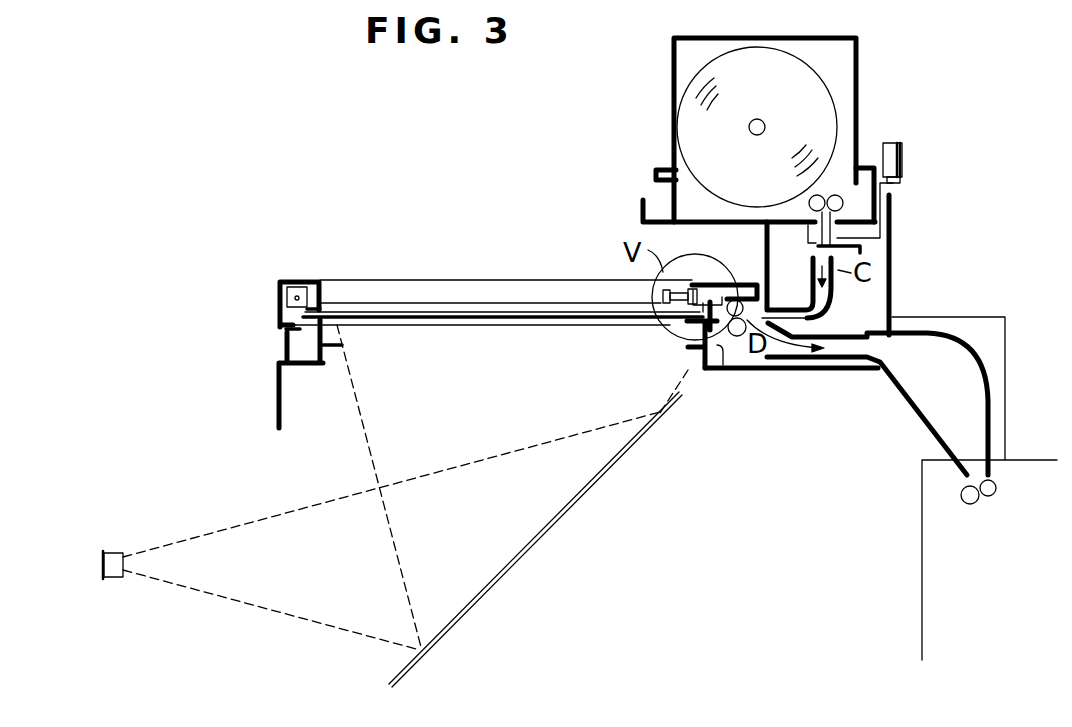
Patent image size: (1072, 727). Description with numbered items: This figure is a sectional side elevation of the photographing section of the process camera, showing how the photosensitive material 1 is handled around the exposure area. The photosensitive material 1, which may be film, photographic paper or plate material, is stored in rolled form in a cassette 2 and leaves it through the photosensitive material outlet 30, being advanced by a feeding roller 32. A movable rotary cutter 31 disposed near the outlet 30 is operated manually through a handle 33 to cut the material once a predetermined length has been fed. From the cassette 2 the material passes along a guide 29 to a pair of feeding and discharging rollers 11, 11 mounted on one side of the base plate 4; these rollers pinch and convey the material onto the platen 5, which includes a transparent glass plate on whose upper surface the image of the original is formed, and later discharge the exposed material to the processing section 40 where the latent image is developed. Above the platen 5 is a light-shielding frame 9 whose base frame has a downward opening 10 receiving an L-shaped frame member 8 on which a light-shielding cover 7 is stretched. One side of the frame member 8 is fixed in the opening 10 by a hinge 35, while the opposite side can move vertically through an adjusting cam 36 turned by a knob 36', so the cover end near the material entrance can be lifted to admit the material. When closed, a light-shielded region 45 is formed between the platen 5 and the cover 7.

The photosensitive material 1 is at (836, 117).
The cassette 2 is at (858, 82).
The base plate 4 is at (717, 367).
The platen 5 is at (462, 318).
The light-shielding cover 7 is at (380, 300).
The frame member 8 is at (313, 298).
The light-shielding frame 9 is at (298, 272).
The downward opening 10 is at (288, 313).
The photosensitive material feeding and discharging rollers 11 is at (747, 297).
The guide 29 is at (838, 305).
The photosensitive material outlet 30 is at (818, 235).
The movable rotary cutter 31 is at (860, 258).
The feeding roller 32 is at (827, 196).
The handle 33 is at (902, 163).
The hinge 35 is at (287, 331).
The cam 36 is at (663, 334).
The knob 36' is at (663, 276).
The processing section 40 is at (1040, 463).
The light-shielded region 45 is at (423, 317).